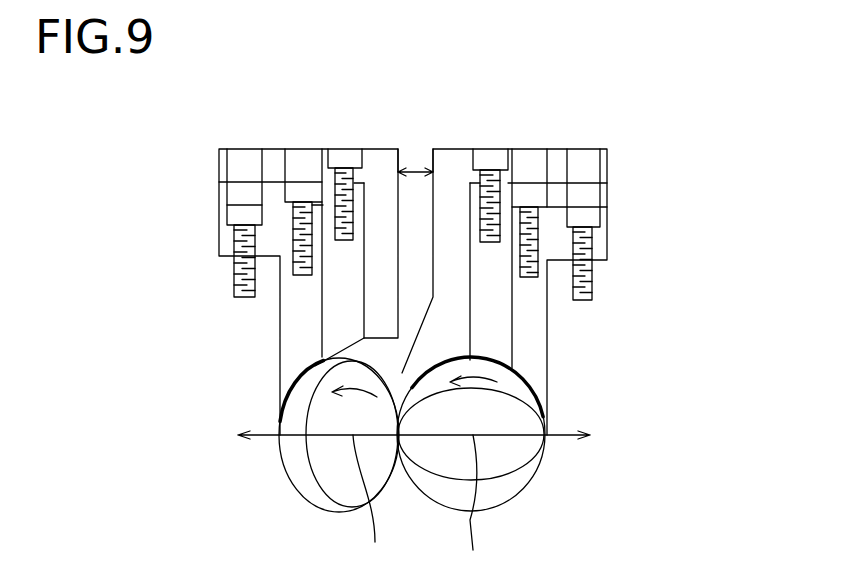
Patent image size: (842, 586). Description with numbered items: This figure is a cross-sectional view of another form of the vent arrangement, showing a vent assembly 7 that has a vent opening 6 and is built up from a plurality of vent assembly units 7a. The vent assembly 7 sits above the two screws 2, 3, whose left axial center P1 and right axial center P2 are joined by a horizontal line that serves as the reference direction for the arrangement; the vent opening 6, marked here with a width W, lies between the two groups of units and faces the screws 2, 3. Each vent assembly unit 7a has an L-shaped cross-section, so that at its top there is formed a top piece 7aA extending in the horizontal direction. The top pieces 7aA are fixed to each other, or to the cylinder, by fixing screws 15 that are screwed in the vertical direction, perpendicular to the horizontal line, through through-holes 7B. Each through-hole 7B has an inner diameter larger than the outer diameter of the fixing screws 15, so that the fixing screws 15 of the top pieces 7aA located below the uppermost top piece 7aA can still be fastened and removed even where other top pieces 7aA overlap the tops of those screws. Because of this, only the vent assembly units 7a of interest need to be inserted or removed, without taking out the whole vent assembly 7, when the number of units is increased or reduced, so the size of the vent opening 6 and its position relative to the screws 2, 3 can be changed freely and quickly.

The vent assembly 7 is at (260, 378).
The vent assembly unit 7a is at (377, 310).
The through-hole 7B is at (243, 160).
The top piece 7aA is at (272, 160).
The fixing screw 15 is at (343, 157).
The vent opening 6 is at (410, 160).
The gap width W is at (418, 165).
The screw 2 is at (330, 465).
The screw 3 is at (520, 452).
The left axial center P1 is at (370, 506).
The right axial center P2 is at (473, 510).